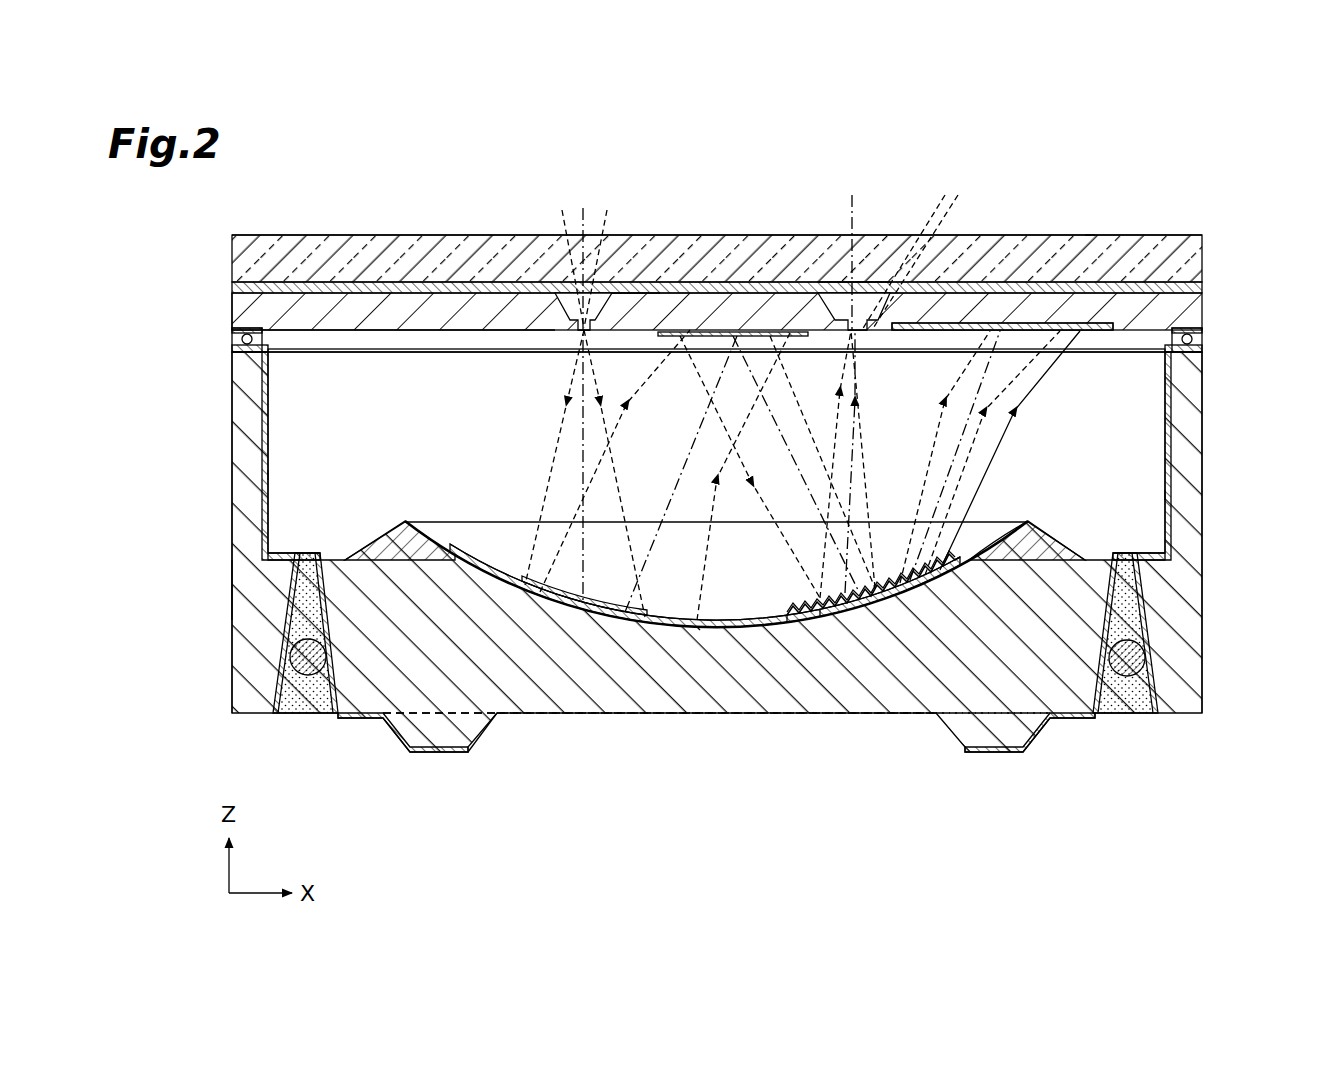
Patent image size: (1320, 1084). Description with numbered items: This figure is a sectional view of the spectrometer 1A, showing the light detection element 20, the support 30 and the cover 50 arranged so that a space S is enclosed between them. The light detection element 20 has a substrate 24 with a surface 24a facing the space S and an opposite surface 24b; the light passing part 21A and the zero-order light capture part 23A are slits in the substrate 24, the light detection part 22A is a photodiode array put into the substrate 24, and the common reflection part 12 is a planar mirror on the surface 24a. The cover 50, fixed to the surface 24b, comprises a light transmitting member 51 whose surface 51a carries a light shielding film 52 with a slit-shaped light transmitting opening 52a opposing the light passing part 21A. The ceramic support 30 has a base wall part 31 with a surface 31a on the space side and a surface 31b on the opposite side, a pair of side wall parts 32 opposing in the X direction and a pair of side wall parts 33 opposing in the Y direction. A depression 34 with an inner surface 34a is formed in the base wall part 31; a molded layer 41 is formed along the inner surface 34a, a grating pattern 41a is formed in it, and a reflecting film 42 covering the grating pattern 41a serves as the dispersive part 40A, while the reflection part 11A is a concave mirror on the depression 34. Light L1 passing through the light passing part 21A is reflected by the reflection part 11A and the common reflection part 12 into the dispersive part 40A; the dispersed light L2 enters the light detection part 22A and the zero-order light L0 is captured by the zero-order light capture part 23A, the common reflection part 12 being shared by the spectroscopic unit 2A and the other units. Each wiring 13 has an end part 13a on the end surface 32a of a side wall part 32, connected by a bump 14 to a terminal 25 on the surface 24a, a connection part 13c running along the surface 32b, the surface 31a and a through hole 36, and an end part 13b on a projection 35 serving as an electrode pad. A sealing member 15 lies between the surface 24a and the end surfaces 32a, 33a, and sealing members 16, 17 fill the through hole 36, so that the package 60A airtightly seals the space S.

The spectrometer 1A is at (1090, 183).
The spectroscopic unit 2A is at (871, 581).
The reflection part 11A is at (560, 582).
The common reflection part 12 is at (737, 337).
The wiring 13 is at (265, 465).
The end part 13a is at (250, 344).
The end part 13b is at (440, 755).
The connection part 13c is at (268, 445).
The bump 14 is at (242, 339).
The sealing member 15 is at (638, 347).
The sealing member 16 is at (300, 655).
The sealing member 17 is at (305, 690).
The light detection element 20 is at (1206, 310).
The light passing part 21A is at (579, 333).
The light detection part 22A is at (1030, 331).
The zero-order light capture part 23A is at (880, 332).
The substrate 24 is at (237, 305).
The surface 24a is at (340, 332).
The surface 24b is at (317, 370).
The terminal 25 is at (247, 330).
The support 30 is at (1208, 590).
The base wall part 31 is at (735, 705).
The surface 31a is at (403, 522).
The surface 31b is at (585, 722).
The side wall part 32 is at (240, 432).
The end surface 32a is at (248, 350).
The surface 32b is at (268, 475).
The side wall part 33 is at (417, 365).
The end surface 33a is at (360, 350).
The depression 34 is at (705, 585).
The inner surface 34a is at (712, 627).
The projection 35 is at (482, 733).
The through hole 36 is at (303, 713).
The dispersive part 40A is at (818, 592).
The molded layer 41 is at (700, 630).
The grating pattern 41a is at (820, 604).
The reflecting film 42 is at (870, 594).
The cover 50 is at (1206, 250).
The light transmitting member 51 is at (1148, 250).
The surface 51a is at (1206, 287).
The light shielding film 52 is at (1052, 288).
The light transmitting opening 52a is at (583, 334).
The package 60A is at (228, 592).
The space S is at (414, 459).
The zero-order light L0 is at (876, 290).
The light L1 is at (562, 228).
The light L2 is at (948, 290).